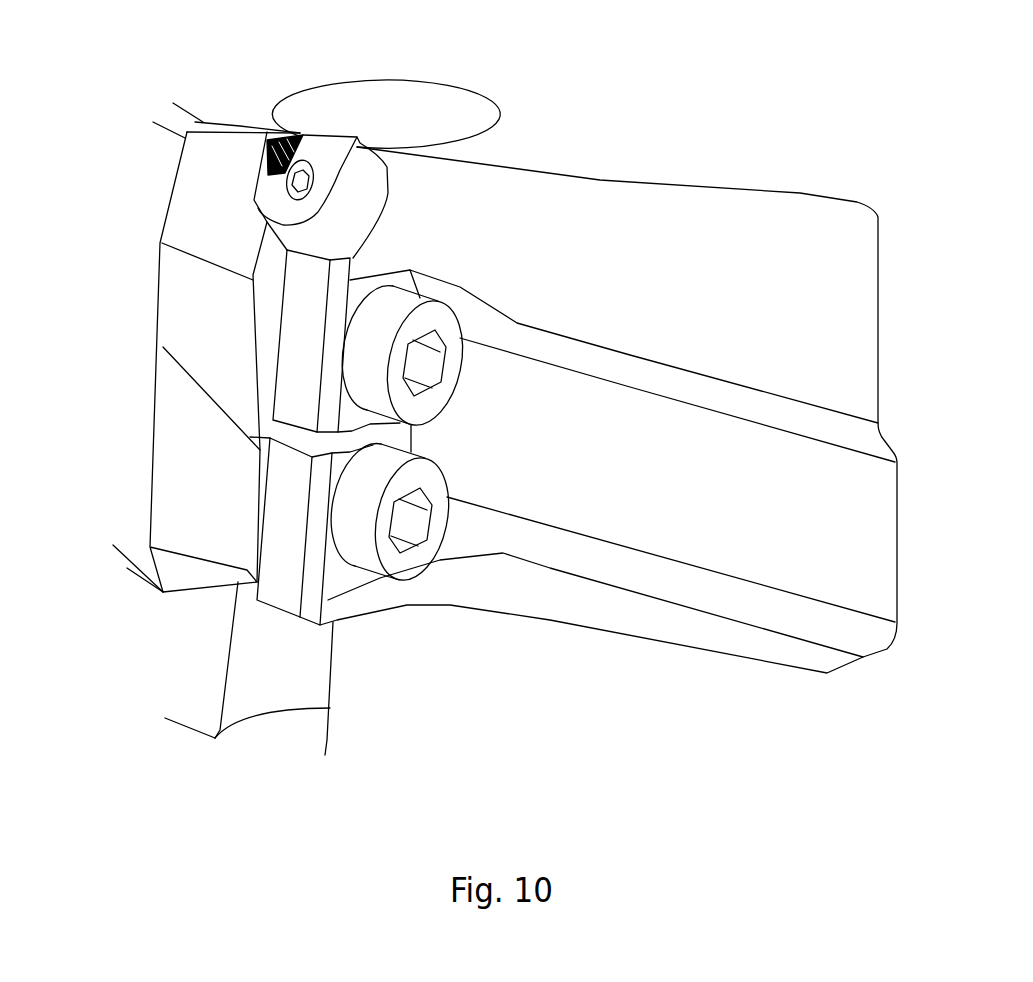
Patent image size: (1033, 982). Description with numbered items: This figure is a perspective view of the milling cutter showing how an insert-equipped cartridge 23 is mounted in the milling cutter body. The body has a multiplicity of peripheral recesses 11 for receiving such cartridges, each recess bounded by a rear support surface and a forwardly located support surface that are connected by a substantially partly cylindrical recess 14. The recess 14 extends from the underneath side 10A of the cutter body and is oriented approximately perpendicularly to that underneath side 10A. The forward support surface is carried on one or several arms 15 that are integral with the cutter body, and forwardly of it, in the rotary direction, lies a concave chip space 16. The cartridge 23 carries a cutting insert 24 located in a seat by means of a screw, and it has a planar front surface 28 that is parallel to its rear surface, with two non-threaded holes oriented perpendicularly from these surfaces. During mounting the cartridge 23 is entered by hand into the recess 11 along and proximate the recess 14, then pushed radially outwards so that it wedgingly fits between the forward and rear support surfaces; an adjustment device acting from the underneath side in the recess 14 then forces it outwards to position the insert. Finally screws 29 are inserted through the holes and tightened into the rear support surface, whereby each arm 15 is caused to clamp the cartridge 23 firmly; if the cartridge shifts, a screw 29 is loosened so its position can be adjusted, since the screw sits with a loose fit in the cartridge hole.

The underneath side 10A is at (632, 140).
The peripheral recess 11 is at (245, 725).
The recess 14 is at (263, 703).
The arm 15 is at (348, 418).
The concave chip space 16 is at (407, 212).
The insert-equipped cartridge 23 is at (187, 212).
The cutting insert 24 is at (315, 152).
The front surface 28 is at (267, 293).
The screw 29 is at (442, 317).